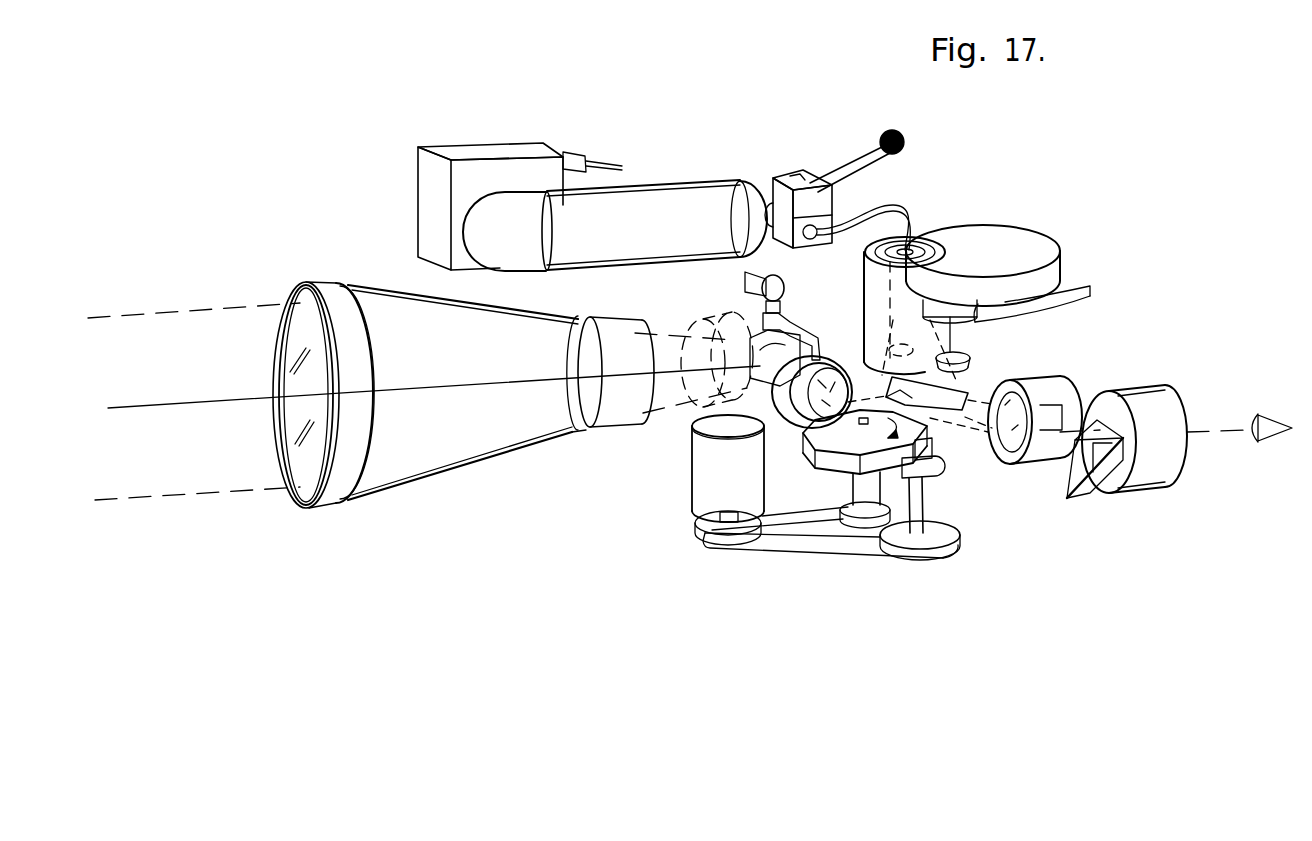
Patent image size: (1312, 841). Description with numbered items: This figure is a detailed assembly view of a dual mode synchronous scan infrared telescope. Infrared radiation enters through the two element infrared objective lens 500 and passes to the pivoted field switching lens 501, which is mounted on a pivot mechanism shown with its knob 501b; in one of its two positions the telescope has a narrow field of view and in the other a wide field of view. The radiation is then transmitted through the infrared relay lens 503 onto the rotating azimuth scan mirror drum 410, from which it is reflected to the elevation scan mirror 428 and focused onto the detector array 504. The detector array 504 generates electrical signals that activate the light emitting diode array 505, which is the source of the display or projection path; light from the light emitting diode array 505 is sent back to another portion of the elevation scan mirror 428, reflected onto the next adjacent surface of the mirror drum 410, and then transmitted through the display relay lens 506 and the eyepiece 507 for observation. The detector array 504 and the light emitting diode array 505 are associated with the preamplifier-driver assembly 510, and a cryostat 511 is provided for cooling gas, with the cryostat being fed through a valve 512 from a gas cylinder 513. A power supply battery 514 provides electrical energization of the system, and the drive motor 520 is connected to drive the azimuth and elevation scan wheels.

The objective lens system 500 is at (415, 460).
The field switching lens 501 is at (703, 319).
The adjustment knob 501b is at (788, 283).
The infrared relay lens 503 is at (822, 368).
The detector array 504 is at (944, 274).
The light emitting diode array 505 is at (1060, 300).
The display relay lens 506 is at (1052, 380).
The eyepiece 507 is at (1170, 393).
The preamplifier-driver assembly 510 is at (1036, 240).
The cryostat 511 is at (928, 236).
The valve lever 512 is at (896, 130).
The gas cylinder 513 is at (664, 195).
The power supply battery 514 is at (432, 165).
The elevation scan mirror 428 is at (962, 394).
The azimuth scan mirror drum 410 is at (833, 455).
The drive motor 520 is at (688, 506).